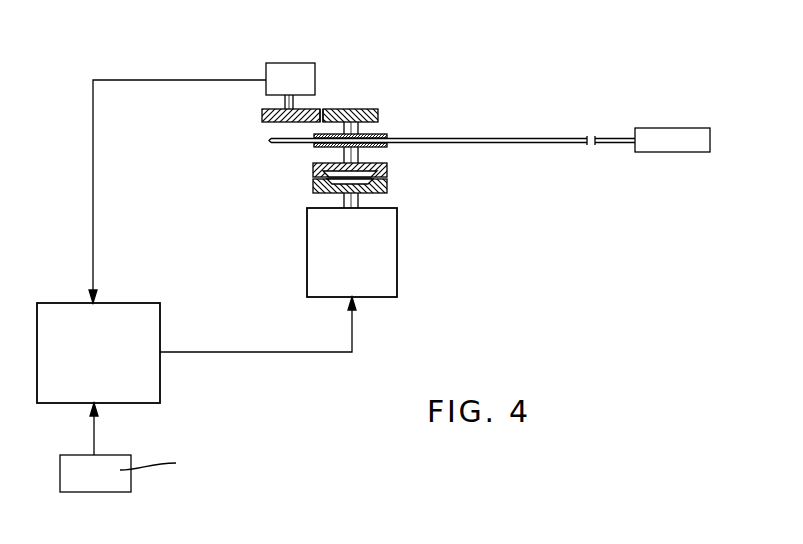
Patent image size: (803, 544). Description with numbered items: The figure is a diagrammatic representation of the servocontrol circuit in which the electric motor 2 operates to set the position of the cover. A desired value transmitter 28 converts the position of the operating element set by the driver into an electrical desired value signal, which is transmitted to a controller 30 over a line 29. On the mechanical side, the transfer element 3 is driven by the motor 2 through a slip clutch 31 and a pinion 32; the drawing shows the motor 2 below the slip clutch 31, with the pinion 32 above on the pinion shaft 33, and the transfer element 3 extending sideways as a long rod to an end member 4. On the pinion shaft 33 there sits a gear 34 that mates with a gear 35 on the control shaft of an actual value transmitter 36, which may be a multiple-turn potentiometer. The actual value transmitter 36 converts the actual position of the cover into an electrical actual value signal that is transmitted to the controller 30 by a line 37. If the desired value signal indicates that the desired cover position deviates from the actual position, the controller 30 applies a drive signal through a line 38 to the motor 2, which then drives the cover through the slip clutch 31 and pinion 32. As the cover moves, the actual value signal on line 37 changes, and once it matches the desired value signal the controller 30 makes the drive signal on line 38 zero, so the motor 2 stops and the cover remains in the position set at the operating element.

The motor 2 is at (397, 250).
The transfer element 3 is at (505, 145).
The end member 4 is at (672, 140).
The desired value transmitter 28 is at (110, 480).
The line 29 is at (94, 440).
The controller 30 is at (140, 380).
The slip clutch 31 is at (313, 170).
The pinion 32 is at (388, 135).
The pinion shaft 33 is at (353, 150).
The gear 34 is at (352, 109).
The gear 35 is at (268, 124).
The actual value transmitter 36 is at (296, 70).
The line 37 is at (93, 207).
The line 38 is at (352, 330).